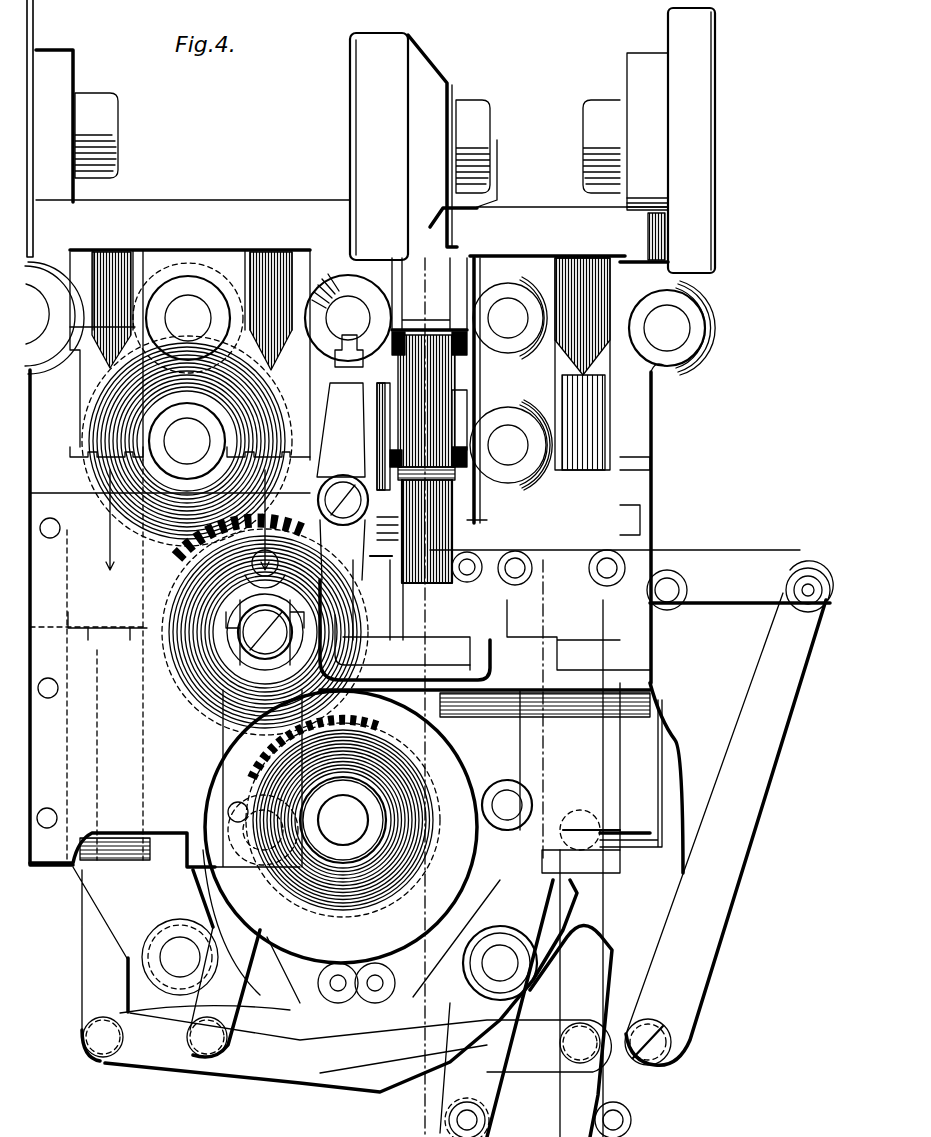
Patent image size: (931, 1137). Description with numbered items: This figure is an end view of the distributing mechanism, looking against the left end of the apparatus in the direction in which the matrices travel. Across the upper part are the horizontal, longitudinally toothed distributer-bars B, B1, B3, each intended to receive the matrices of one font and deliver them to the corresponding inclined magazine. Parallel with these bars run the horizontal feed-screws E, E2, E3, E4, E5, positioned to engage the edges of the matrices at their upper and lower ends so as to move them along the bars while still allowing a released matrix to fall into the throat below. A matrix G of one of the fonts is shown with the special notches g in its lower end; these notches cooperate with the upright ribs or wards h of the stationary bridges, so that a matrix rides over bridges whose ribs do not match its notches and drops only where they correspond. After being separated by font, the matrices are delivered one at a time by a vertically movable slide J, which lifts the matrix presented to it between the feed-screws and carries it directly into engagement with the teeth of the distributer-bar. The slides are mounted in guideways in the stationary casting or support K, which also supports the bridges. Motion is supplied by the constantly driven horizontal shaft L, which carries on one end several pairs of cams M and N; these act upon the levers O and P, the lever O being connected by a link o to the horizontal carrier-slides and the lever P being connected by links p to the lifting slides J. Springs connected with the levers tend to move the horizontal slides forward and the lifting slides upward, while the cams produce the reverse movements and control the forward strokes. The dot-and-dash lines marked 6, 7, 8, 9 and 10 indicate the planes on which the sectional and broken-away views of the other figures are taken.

The feed-screw E is at (51, 260).
The distributer-bar B is at (117, 252).
The feed-screw E2 is at (229, 269).
The distributer-bar B1 is at (297, 258).
The feed-screw E3 is at (401, 270).
The feed-screw E4 is at (514, 266).
The distributer-bar B3 is at (606, 258).
The feed-screw E5 is at (712, 312).
The matrix G is at (580, 446).
The notch g is at (405, 399).
The rib or ward h is at (450, 399).
The stationary casting or support K is at (656, 513).
The vertically movable slide J is at (80, 655).
The lever O is at (135, 708).
The link o is at (544, 599).
The horizontal shaft L is at (332, 826).
The cam N is at (296, 930).
The cam M is at (308, 990).
The lever P is at (358, 986).
The link p is at (108, 972).
The section line 6— 6 is at (497, 560).
The section line 7— 7 is at (579, 1136).
The section line 8— 8 is at (765, 328).
The section line 9— 9 is at (765, 383).
The section line 10— 10 is at (778, 548).